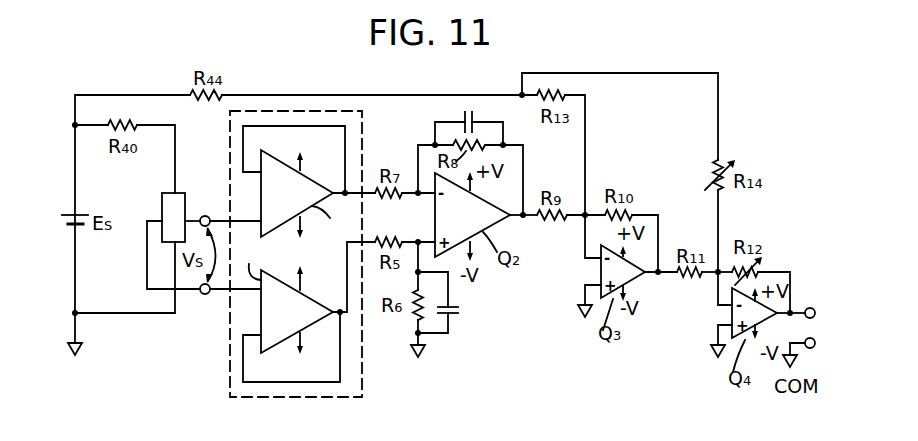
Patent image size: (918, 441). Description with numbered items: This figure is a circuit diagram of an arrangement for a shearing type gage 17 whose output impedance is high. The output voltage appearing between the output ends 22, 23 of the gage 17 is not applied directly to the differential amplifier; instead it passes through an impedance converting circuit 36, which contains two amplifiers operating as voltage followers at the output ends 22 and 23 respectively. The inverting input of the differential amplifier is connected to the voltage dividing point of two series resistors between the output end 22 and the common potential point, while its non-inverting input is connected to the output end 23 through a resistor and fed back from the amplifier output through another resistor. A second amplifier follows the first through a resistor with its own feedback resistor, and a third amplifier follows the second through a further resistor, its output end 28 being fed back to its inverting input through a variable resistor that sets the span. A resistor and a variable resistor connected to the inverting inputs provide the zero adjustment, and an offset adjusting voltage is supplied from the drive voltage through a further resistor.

The shearing type gage 17 is at (162, 207).
The output end 22 is at (205, 294).
The output end 23 is at (205, 216).
The output end of amplifier Q4 28 is at (810, 308).
The impedance converting circuit 36 is at (362, 368).